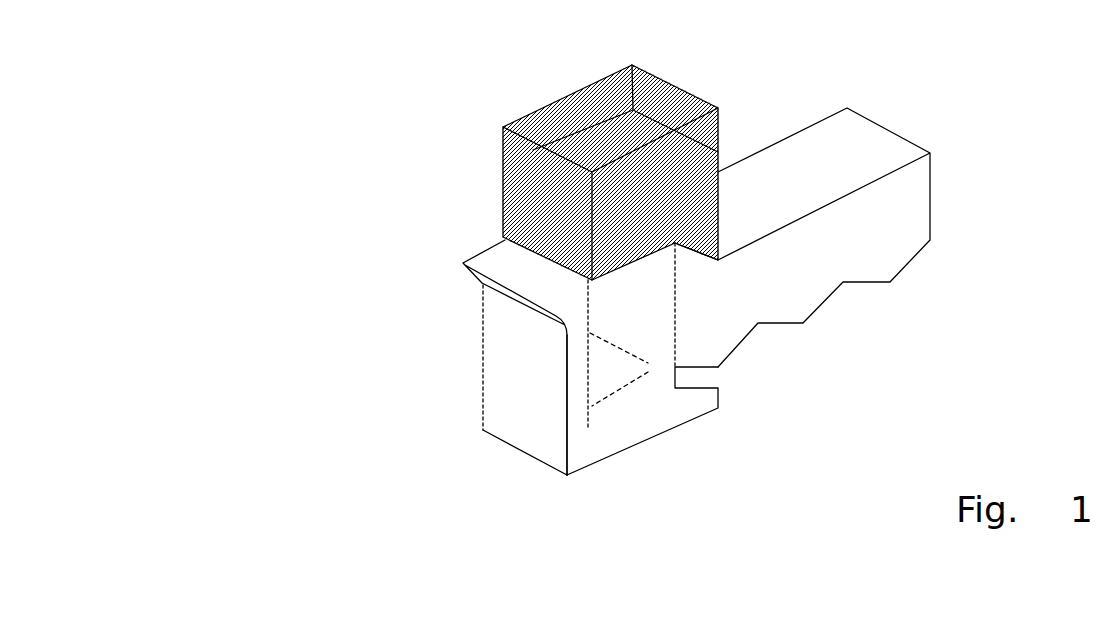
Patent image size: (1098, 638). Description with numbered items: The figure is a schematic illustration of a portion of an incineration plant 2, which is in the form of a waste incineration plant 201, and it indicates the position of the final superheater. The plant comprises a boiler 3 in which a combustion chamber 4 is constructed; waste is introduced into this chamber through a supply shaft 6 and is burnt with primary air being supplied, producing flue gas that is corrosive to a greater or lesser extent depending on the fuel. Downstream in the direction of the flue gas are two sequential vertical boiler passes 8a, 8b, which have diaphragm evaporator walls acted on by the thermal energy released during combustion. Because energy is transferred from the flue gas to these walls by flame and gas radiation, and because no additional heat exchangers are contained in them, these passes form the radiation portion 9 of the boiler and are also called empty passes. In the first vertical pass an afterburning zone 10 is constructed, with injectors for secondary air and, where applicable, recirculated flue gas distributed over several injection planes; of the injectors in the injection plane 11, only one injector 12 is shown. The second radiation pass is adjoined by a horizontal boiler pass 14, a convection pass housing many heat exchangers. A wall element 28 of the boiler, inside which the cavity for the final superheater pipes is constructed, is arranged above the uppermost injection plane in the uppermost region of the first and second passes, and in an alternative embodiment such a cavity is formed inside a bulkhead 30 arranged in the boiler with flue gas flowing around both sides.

The incineration plant 2 is at (340, 235).
The waste incineration plant 201 is at (231, 218).
The boiler 3 is at (497, 222).
The combustion chamber 4 is at (645, 418).
The supply shaft 6 is at (578, 387).
The first vertical boiler pass 8a is at (600, 353).
The second vertical boiler pass 8b is at (695, 258).
The radiation portion 9 is at (623, 277).
The afterburning zone 10 is at (625, 307).
The injection plane 11 is at (617, 398).
The injector 12 is at (663, 367).
The horizontal boiler pass 14 is at (880, 223).
The wall element 28 is at (503, 205).
The bulkhead 30 is at (567, 102).